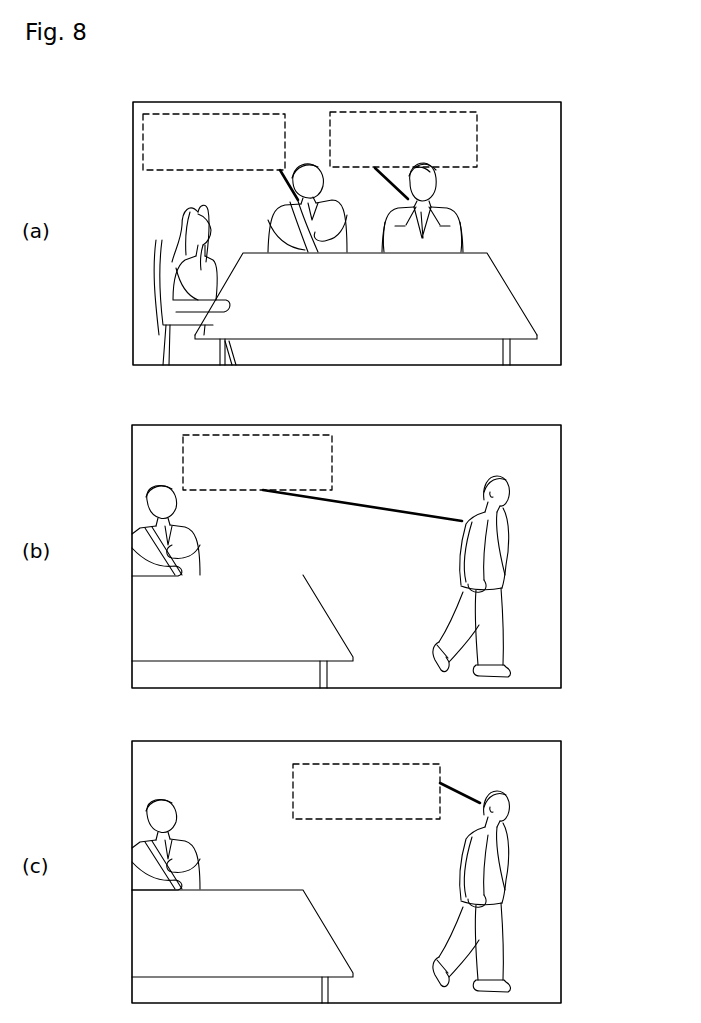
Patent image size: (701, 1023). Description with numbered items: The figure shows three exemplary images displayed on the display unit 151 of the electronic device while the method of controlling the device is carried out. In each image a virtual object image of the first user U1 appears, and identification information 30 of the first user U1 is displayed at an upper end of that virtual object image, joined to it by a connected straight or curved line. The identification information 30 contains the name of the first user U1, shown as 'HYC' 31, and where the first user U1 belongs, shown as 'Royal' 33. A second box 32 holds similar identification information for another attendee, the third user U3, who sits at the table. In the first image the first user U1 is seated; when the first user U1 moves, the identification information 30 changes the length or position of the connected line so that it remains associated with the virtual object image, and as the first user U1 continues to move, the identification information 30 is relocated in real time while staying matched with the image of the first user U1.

The identification information 30 is at (378, 112).
The name of the first user 31 is at (330, 128).
The information box of another user 32 is at (143, 142).
The where the first user belongs 33 is at (330, 156).
The display screen 151 is at (561, 140).
The first user U1 is at (452, 222).
The third user U3 is at (297, 196).